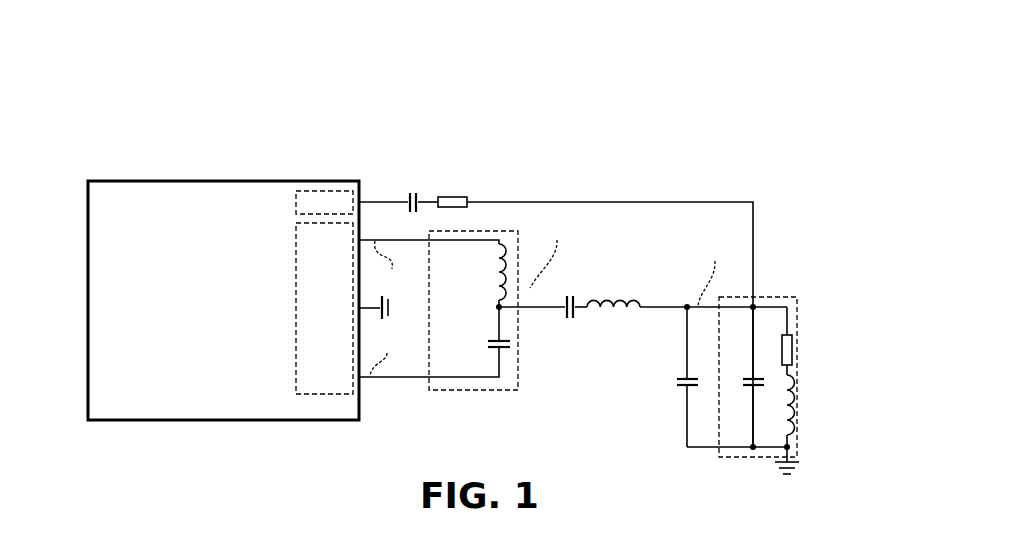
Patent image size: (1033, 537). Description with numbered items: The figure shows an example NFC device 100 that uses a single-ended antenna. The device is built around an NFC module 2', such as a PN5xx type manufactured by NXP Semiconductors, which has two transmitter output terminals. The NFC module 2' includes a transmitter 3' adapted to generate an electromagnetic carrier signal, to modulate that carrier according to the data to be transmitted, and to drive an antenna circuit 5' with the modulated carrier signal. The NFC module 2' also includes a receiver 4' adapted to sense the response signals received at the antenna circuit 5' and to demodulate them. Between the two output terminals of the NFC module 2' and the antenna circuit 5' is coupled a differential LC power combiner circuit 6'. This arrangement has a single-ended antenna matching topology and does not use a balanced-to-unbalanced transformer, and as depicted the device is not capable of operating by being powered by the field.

The NFC reader antenna circuit 100 is at (617, 138).
The NFC module 2' is at (202, 300).
The transmitter 3' is at (301, 308).
The receiver 4' is at (299, 216).
The antenna circuit 5' is at (781, 348).
The differential LC power combiner circuit 6' is at (499, 273).